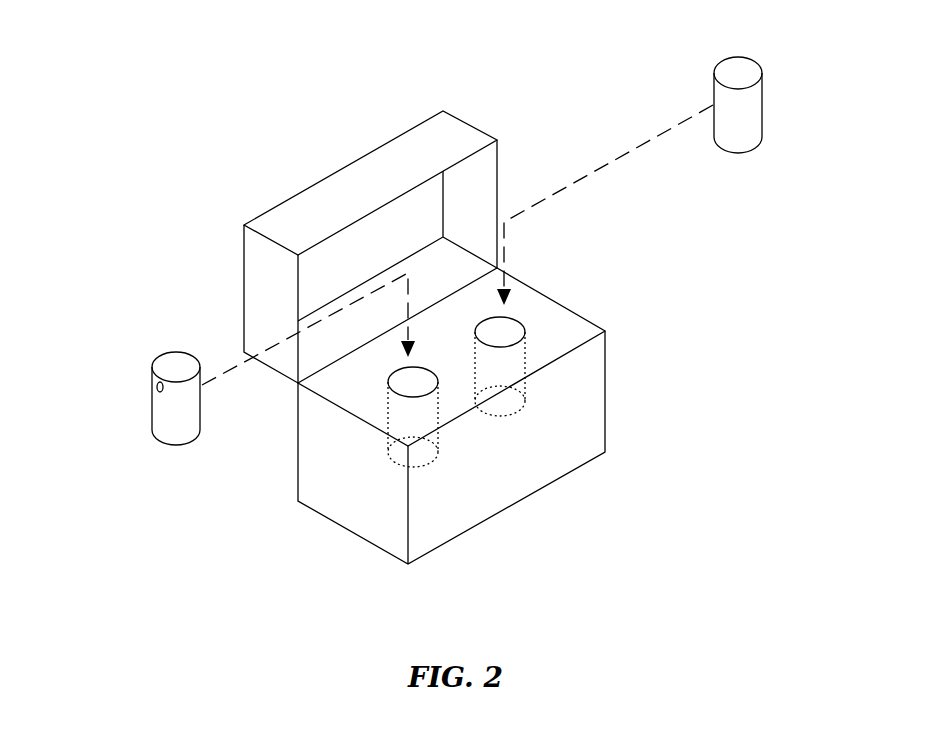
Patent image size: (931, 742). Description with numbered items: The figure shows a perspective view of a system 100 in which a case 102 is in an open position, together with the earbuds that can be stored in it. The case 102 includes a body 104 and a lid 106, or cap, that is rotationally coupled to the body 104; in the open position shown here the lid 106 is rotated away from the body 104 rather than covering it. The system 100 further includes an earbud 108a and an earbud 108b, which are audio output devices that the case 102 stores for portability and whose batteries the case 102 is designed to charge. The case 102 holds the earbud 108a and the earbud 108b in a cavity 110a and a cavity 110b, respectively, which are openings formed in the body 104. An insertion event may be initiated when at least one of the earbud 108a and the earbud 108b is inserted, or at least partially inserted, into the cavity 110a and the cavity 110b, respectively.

The system 100 is at (124, 112).
The case 102 is at (238, 166).
The body 104 is at (342, 530).
The lid 106 is at (243, 260).
The earbud 108a is at (152, 408).
The earbud 108b is at (763, 96).
The cavity 110a is at (398, 397).
The cavity 110b is at (522, 318).